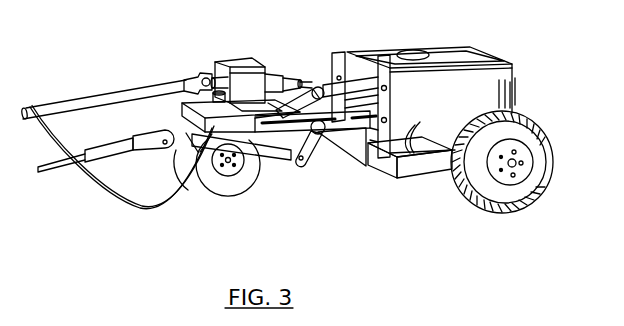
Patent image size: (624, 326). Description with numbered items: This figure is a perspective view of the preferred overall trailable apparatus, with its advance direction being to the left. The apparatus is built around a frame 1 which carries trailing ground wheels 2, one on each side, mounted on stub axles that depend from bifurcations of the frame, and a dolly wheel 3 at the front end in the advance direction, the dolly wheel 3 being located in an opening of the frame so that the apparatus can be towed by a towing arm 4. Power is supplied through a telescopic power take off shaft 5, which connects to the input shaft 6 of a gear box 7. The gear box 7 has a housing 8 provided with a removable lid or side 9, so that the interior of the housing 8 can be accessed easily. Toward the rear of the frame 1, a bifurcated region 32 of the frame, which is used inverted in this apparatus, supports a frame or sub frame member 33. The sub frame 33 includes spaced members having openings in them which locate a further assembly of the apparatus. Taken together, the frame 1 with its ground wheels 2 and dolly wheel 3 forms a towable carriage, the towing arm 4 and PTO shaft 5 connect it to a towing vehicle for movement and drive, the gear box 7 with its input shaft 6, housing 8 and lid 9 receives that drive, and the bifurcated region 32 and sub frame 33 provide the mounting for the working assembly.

The frame 1 is at (372, 186).
The trailing ground wheels 2 is at (520, 192).
The dolly wheel 3 is at (224, 185).
The towing arm 4 is at (52, 170).
The telescopic power take off (PTO) shaft 5 is at (104, 97).
The input shaft 6 is at (206, 72).
The gear box 7 is at (262, 41).
The housing 8 is at (253, 83).
The removable lid or side 9 is at (237, 62).
The bifurcated region 32 is at (406, 168).
The sub frame member 33 is at (466, 90).